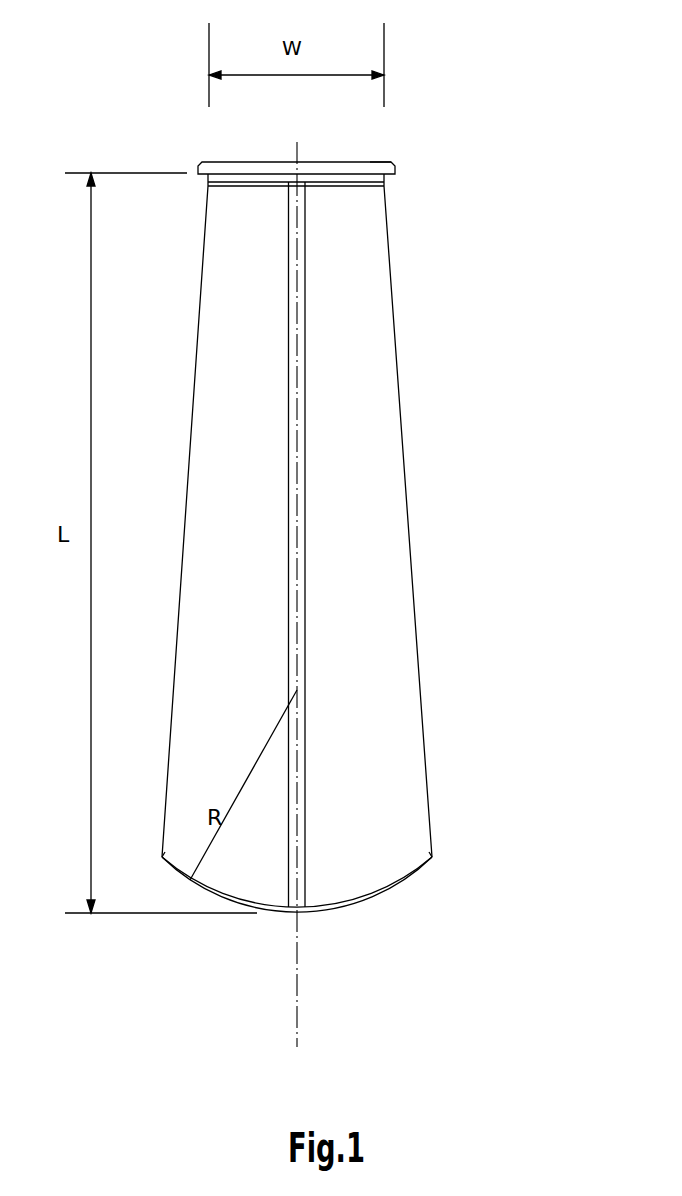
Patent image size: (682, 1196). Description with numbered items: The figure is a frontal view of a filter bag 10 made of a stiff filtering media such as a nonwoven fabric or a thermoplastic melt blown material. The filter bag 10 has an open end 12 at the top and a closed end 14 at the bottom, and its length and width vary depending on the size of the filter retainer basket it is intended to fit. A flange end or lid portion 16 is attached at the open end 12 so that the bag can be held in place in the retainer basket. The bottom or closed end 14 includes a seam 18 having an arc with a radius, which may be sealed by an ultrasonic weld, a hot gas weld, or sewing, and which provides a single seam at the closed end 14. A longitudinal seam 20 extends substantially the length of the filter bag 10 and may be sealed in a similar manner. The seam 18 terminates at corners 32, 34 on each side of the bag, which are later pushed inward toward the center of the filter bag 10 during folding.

The filter bag 10 is at (473, 330).
The open end 12 is at (267, 162).
The closed end 14 is at (370, 880).
The flange end or lid portion 16 is at (390, 160).
The seam 18 is at (193, 883).
The longitudinal seam 20 is at (305, 545).
The corner 32 is at (162, 858).
The corner 34 is at (432, 860).